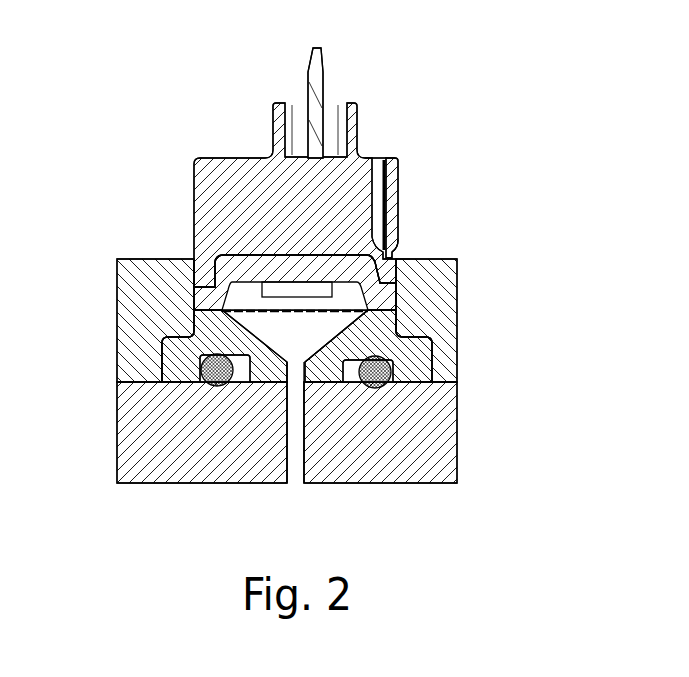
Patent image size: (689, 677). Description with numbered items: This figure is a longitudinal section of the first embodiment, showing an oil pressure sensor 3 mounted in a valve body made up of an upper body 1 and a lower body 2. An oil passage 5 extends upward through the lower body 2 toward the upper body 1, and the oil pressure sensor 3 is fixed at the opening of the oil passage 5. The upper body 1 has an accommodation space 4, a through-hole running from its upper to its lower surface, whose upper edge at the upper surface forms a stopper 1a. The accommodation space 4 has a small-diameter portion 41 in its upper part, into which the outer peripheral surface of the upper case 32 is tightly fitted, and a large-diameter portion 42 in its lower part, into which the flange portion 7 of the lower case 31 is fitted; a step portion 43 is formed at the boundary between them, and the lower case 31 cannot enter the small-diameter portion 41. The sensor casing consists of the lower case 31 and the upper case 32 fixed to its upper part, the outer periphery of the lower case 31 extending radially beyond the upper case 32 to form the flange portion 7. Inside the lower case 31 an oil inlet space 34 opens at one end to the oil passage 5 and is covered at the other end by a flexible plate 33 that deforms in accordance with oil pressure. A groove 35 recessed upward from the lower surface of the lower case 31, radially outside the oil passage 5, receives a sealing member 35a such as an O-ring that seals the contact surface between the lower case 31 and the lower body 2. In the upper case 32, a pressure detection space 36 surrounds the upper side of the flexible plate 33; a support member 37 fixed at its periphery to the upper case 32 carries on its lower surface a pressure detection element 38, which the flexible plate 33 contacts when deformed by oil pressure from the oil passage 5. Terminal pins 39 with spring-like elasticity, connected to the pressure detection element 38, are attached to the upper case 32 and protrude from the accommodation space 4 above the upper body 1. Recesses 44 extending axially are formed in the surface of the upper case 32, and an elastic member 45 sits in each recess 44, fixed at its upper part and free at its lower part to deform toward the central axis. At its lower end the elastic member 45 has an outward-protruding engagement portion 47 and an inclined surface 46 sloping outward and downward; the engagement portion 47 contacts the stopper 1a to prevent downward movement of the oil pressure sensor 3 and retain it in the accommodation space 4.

The upper body 1 is at (145, 282).
The stopper 1a is at (396, 259).
The lower body 2 is at (140, 448).
The oil pressure sensor 3 is at (228, 167).
The accommodation space 4 is at (398, 310).
The oil passage 5 is at (298, 477).
The flange portion 7 is at (178, 358).
The lower case 31 is at (377, 340).
The upper case 32 is at (207, 217).
The flexible plate 33 is at (263, 313).
The oil inlet space 34 is at (327, 328).
The groove 35 is at (350, 372).
The sealing member 35a is at (212, 387).
The pressure detection space 36 is at (347, 297).
The support member 37 is at (263, 262).
The pressure detection element 38 is at (305, 290).
The terminal pins 39 is at (317, 90).
The small-diameter portion 41 is at (190, 272).
The large-diameter portion 42 is at (155, 363).
The step portion 43 is at (170, 337).
The recesses 44 is at (375, 193).
The elastic member 45 is at (393, 205).
The inclined surface 46 is at (400, 242).
The engagement portion 47 is at (402, 253).